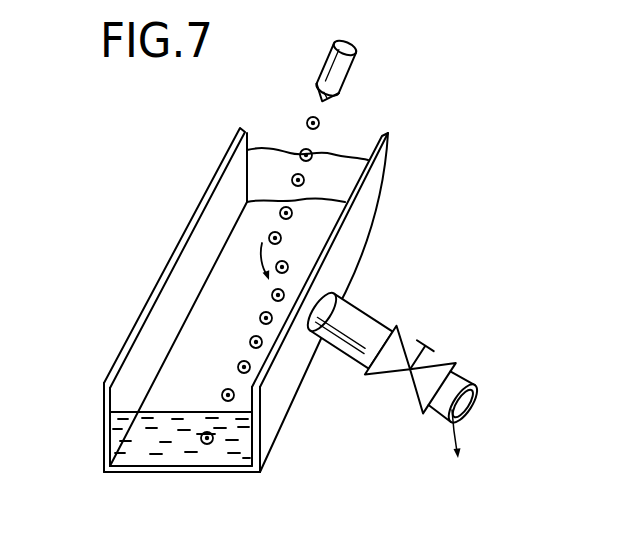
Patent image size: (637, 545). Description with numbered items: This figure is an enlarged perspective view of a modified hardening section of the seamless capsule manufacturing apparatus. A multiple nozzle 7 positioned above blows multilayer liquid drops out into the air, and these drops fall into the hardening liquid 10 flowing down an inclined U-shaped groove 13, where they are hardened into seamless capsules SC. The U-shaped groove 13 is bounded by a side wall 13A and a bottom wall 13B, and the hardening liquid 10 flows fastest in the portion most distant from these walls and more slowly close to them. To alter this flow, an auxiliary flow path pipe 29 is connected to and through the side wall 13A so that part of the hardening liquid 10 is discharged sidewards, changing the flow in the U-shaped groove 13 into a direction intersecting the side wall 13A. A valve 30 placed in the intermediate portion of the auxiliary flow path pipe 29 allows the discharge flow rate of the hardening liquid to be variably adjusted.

The multiple nozzle 7 is at (357, 71).
The U-shaped groove 13 is at (375, 216).
The side wall 13A is at (352, 258).
The bottom wall 13B is at (230, 474).
The hardening liquid 10 is at (128, 447).
The seamless capsule SC is at (250, 342).
The auxiliary flow path pipe 29 is at (352, 320).
The valve 30 is at (440, 364).